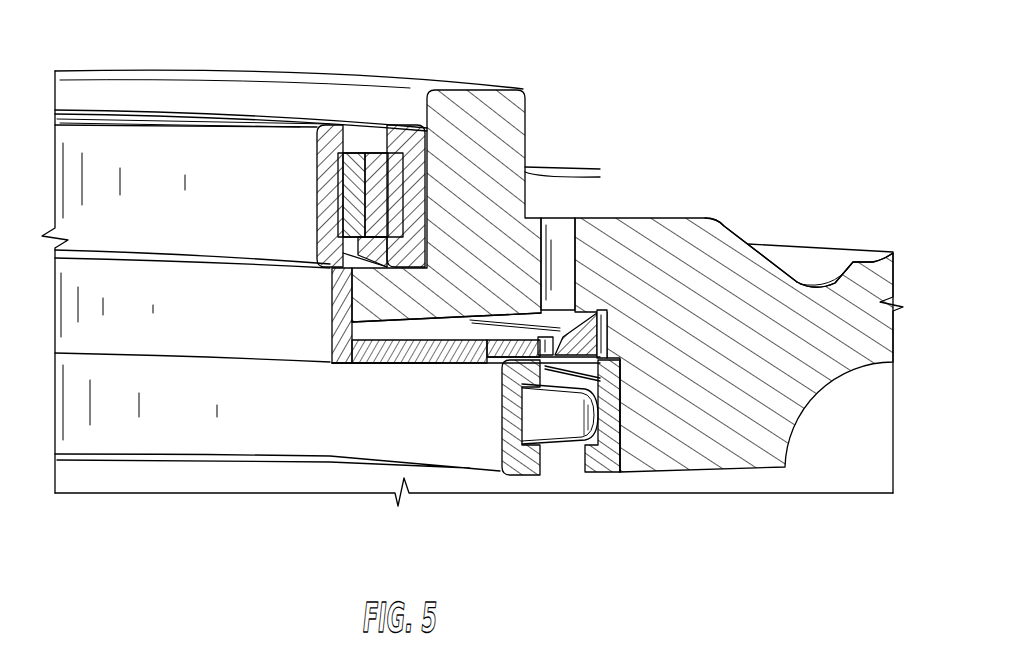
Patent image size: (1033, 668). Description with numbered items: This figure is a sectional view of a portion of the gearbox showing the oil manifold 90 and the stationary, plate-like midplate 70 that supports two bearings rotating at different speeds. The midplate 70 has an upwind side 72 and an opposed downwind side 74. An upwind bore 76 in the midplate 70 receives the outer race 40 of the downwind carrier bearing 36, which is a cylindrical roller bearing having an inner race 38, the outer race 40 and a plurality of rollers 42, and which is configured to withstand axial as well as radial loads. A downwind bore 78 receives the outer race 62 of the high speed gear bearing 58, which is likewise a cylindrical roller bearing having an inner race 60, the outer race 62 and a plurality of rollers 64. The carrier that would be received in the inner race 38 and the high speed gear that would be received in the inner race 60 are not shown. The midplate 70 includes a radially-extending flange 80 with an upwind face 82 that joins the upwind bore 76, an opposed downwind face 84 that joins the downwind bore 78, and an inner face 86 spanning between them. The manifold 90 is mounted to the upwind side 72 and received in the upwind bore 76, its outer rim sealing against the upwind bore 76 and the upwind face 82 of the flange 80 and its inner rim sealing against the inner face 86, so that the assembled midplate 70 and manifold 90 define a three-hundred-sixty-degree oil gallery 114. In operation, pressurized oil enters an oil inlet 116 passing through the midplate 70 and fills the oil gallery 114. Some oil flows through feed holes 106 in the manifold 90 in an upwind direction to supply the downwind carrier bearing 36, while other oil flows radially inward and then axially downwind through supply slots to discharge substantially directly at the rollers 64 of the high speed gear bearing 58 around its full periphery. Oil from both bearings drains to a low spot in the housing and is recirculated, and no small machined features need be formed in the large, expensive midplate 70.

The downwind carrier bearing 36 is at (507, 490).
The inner race 38 is at (277, 417).
The outer race 40 is at (604, 468).
The rollers 42 is at (559, 442).
The high speed gear bearing 58 is at (296, 108).
The inner race 60 is at (244, 208).
The outer race 62 is at (411, 138).
The rollers 64 is at (350, 162).
The midplate 70 is at (882, 278).
The upwind side 72 is at (729, 480).
The downwind side 74 is at (726, 208).
The upwind bore 76 is at (625, 443).
The downwind bore 78 is at (427, 137).
The radially-extending flange 80 is at (559, 248).
The upwind face 82 is at (392, 363).
The downwind face 84 is at (334, 293).
The inner face 86 is at (355, 363).
The manifold 90 is at (425, 363).
The feed holes 106 is at (598, 308).
The oil gallery 114 is at (461, 340).
The oil inlet 116 is at (430, 293).